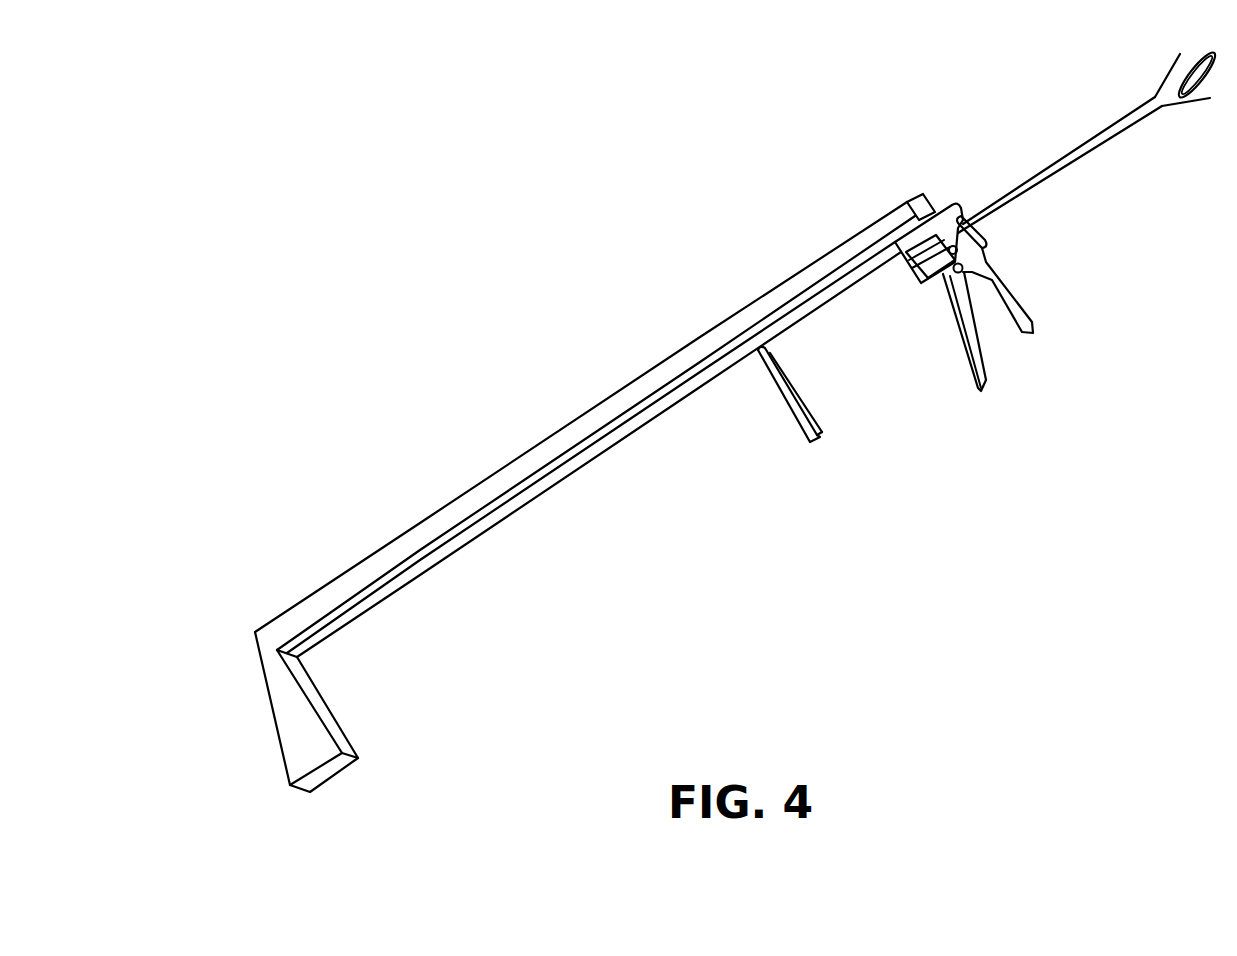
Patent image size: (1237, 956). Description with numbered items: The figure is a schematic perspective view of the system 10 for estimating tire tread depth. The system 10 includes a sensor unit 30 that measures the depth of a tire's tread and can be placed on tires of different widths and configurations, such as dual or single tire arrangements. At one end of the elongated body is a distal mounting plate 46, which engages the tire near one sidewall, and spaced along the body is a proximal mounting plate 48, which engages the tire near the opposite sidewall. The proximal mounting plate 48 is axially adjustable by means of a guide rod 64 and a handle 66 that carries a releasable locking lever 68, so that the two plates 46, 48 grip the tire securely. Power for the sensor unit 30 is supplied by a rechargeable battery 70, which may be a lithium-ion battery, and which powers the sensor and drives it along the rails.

The system 10 is at (518, 260).
The sensor unit 30 is at (443, 503).
The distal mounting plate 46 is at (318, 755).
The proximal mounting plate 48 is at (823, 433).
The guide rod 64 is at (1097, 148).
The handle 66 is at (983, 343).
The releasable locking lever 68 is at (1008, 300).
The rechargeable battery 70 is at (917, 202).